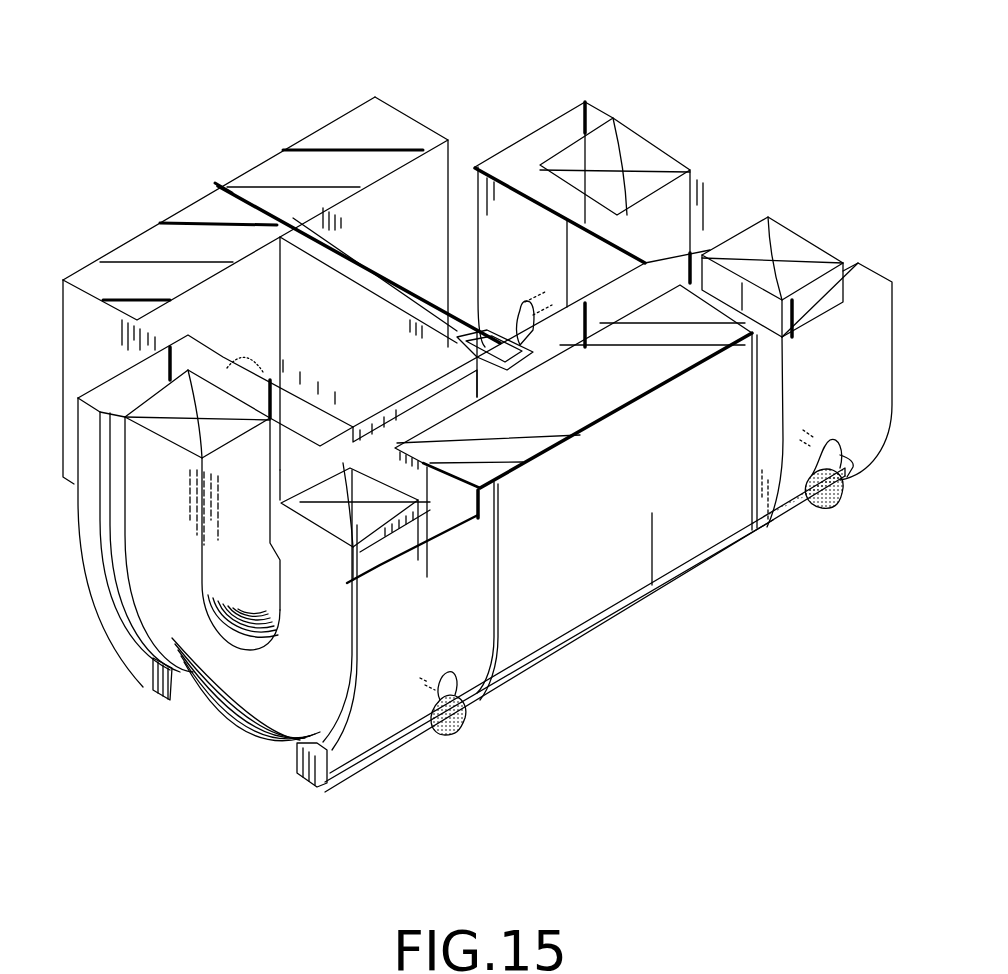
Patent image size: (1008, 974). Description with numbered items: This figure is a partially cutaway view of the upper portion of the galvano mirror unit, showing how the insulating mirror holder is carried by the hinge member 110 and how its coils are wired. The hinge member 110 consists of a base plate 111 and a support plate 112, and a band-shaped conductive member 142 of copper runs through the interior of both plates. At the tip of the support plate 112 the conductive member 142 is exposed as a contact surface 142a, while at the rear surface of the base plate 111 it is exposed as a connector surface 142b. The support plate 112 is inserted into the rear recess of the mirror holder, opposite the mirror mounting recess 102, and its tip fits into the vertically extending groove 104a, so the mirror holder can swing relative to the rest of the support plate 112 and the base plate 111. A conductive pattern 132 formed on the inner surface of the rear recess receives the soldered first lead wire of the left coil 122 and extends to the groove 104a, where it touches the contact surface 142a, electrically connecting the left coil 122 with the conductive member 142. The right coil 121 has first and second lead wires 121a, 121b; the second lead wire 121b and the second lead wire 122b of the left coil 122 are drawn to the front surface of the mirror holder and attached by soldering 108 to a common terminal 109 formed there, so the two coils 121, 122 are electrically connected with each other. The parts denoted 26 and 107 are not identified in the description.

The hinge member 110 is at (410, 44).
The mirror mounting recess 102 is at (760, 402).
The slit 26 is at (660, 557).
The vertically extending groove 104a is at (600, 416).
The boss 107 is at (258, 328).
The soldering 108 is at (823, 508).
The common terminal 109 is at (583, 640).
The base plate 111 is at (123, 253).
The support plate 112 is at (418, 252).
The right coil 121 is at (793, 238).
The first lead wire 121a is at (515, 305).
The second lead wire 121b is at (845, 465).
The left coil 122 is at (227, 690).
The second lead wire 122b is at (457, 707).
The conductive pattern 132 is at (387, 410).
The conductive member 142 is at (270, 212).
The contact surface 142a is at (540, 354).
The connector surface 142b is at (216, 182).